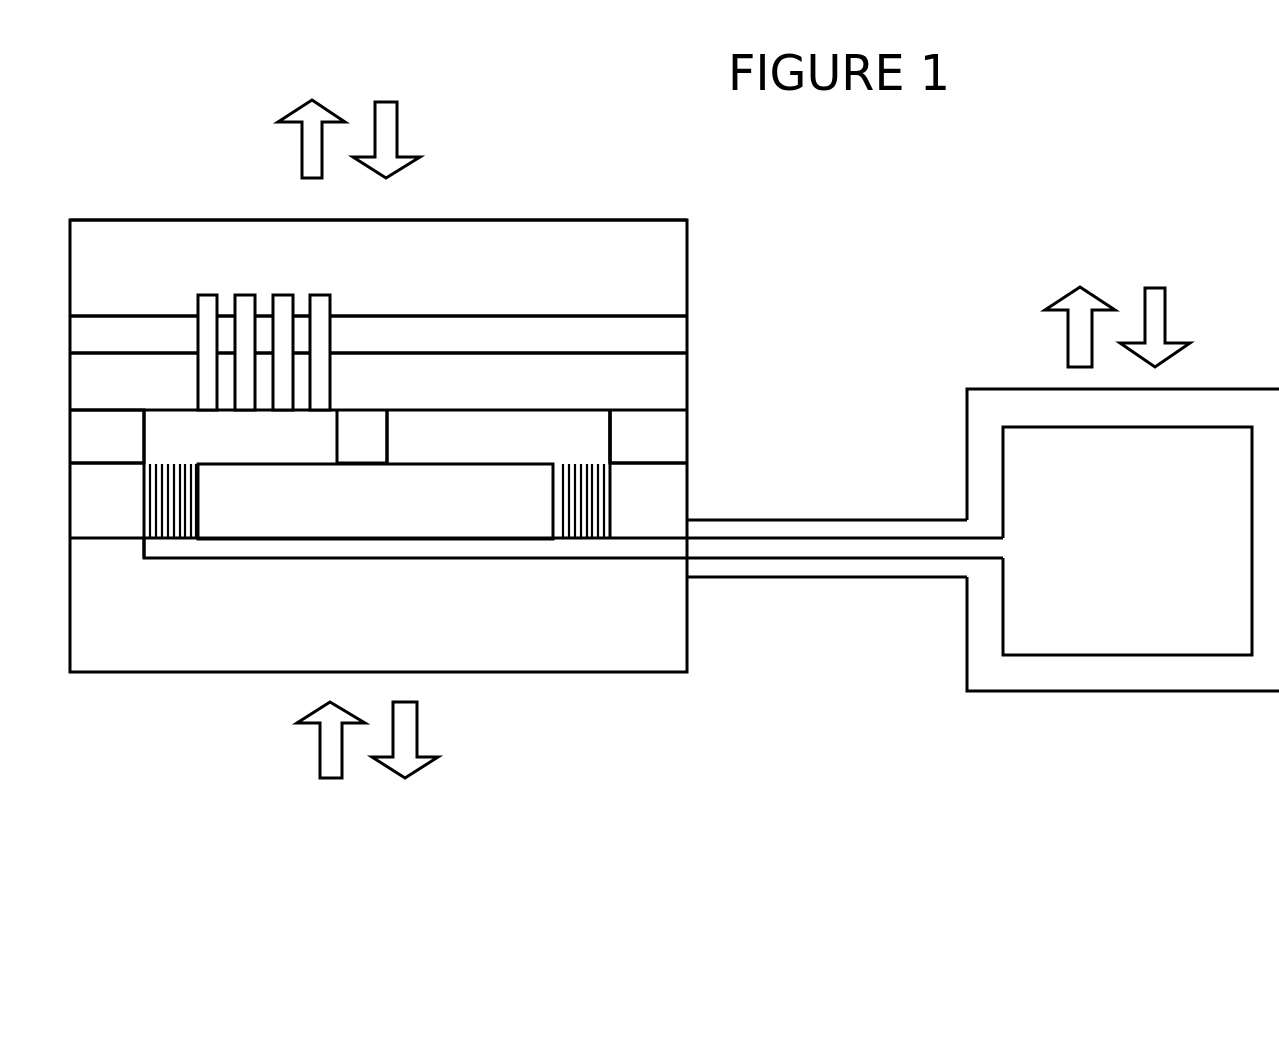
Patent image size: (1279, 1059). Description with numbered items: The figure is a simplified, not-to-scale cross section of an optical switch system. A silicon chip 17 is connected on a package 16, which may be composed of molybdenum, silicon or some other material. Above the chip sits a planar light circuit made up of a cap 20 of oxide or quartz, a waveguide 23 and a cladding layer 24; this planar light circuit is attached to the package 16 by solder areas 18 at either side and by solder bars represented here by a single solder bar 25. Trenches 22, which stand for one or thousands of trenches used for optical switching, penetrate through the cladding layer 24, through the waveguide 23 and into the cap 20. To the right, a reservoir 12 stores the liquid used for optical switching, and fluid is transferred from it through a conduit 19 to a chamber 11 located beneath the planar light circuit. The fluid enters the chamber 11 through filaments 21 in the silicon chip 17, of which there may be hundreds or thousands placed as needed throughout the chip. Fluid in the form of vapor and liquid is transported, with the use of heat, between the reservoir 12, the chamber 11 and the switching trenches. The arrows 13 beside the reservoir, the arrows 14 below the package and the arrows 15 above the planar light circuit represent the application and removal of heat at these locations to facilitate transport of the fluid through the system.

The chamber 11 is at (219, 453).
The reservoir 12 is at (1129, 580).
The arrows 13 is at (1182, 305).
The arrows 14 is at (450, 737).
The arrows 15 is at (413, 137).
The package 16 is at (606, 619).
The silicon chip 17 is at (491, 523).
The solder areas 18 is at (117, 450).
The conduit 19 is at (787, 545).
The cap 20 is at (678, 263).
The filaments 21 is at (178, 462).
The trenches 22 is at (210, 411).
The waveguide 23 is at (620, 348).
The cladding layer 24 is at (660, 388).
The solder bar 25 is at (372, 450).